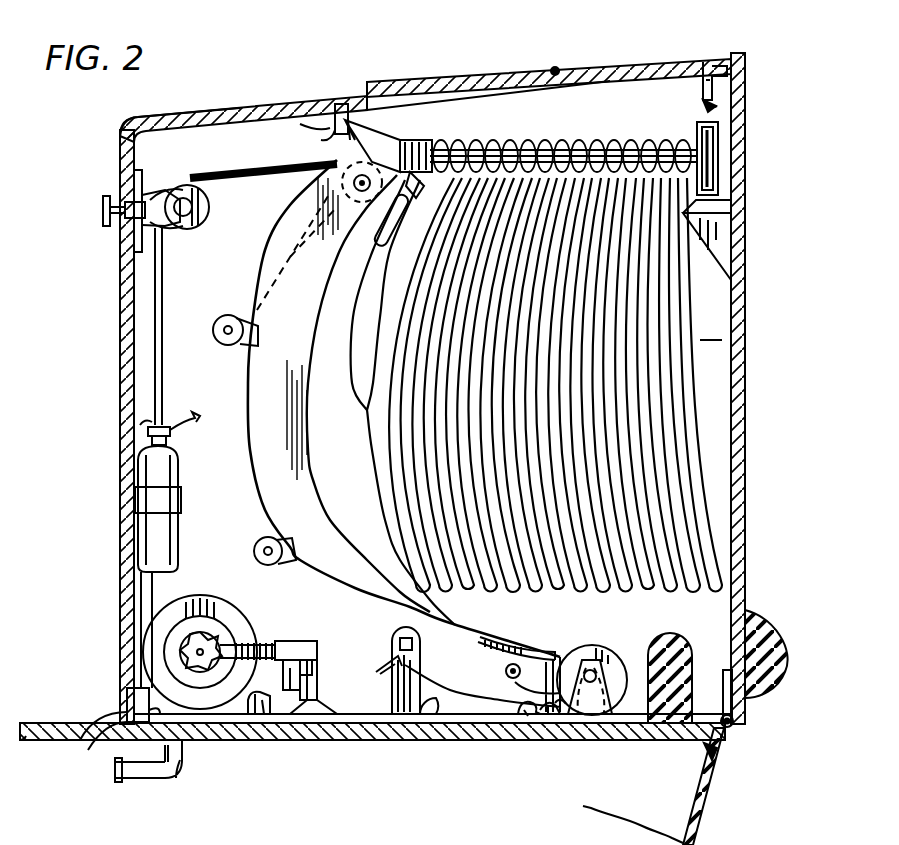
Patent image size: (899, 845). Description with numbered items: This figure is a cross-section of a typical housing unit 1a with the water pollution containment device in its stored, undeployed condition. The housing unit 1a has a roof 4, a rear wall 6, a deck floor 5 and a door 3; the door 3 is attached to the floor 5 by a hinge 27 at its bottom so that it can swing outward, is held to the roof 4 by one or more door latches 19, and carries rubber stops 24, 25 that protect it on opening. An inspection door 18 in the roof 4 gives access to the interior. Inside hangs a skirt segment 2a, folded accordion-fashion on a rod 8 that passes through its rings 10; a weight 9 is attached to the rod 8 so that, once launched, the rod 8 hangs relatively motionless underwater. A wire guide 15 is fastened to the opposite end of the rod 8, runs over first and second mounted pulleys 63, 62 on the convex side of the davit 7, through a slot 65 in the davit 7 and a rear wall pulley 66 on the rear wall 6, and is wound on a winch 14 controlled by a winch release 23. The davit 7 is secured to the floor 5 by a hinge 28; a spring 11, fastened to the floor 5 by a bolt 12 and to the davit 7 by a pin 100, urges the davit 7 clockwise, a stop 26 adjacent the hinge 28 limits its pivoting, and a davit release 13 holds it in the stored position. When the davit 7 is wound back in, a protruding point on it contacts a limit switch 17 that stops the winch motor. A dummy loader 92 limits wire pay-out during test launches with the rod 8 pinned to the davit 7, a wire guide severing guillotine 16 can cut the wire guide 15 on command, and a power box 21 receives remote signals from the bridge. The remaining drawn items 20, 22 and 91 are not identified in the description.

The housing unit 1a is at (216, 108).
The roof 4 is at (260, 106).
The inspection door 18 is at (466, 86).
The limit switch 17 is at (340, 100).
The door latch 19 is at (712, 61).
The rings 10 is at (547, 142).
The rod 8 is at (612, 141).
The weight 9 is at (720, 160).
The bracket 20 is at (722, 210).
The door 3 is at (745, 235).
The skirt segment 2a is at (706, 352).
The wire guide severing guillotine 16 is at (102, 201).
The rear wall pulley 66 is at (210, 223).
The slot 65 is at (290, 257).
The second mounted pulley 62 is at (219, 324).
The rear wall 6 is at (119, 326).
The wire guide 15 is at (163, 368).
The davit 7 is at (268, 426).
The first mounted pulley 63 is at (260, 538).
The winch 14 is at (202, 592).
The motor shaft 91 is at (240, 628).
The power box 21 is at (127, 696).
The hose connector 22 is at (180, 771).
The dummy loader 92 is at (255, 724).
The winch release 23 is at (312, 722).
The deck floor 5 is at (356, 741).
The davit release 13 is at (420, 726).
The bolt 12 is at (522, 740).
The spring 11 is at (546, 737).
The pin 100 is at (506, 672).
The hinge 28 is at (594, 647).
The stop 26 is at (666, 641).
The rubber stop 24 is at (780, 627).
The hinge 27 is at (732, 730).
The rubber stop 25 is at (716, 794).